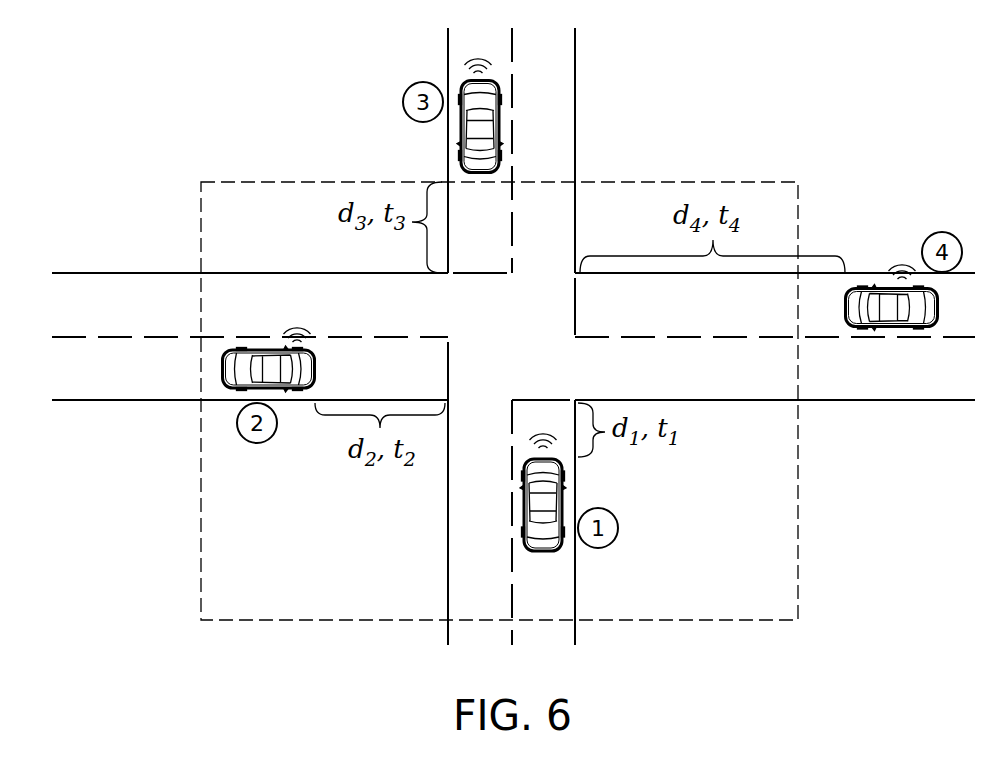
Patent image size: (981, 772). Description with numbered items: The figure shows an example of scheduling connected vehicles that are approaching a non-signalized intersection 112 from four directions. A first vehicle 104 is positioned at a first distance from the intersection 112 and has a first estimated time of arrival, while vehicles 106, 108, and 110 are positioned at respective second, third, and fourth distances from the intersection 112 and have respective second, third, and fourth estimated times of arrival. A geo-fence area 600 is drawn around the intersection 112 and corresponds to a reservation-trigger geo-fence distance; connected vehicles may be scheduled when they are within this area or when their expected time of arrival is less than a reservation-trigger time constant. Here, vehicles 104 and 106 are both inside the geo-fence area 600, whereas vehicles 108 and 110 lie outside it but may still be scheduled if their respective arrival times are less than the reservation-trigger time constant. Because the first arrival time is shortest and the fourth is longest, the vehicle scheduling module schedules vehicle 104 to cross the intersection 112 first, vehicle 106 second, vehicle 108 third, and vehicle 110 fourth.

The connected vehicle 104 is at (540, 552).
The connected vehicle 106 is at (255, 350).
The connected vehicle 108 is at (500, 128).
The connected vehicle 110 is at (893, 327).
The non-signalized intersection 112 is at (523, 300).
The geo-fence area 600 is at (760, 182).